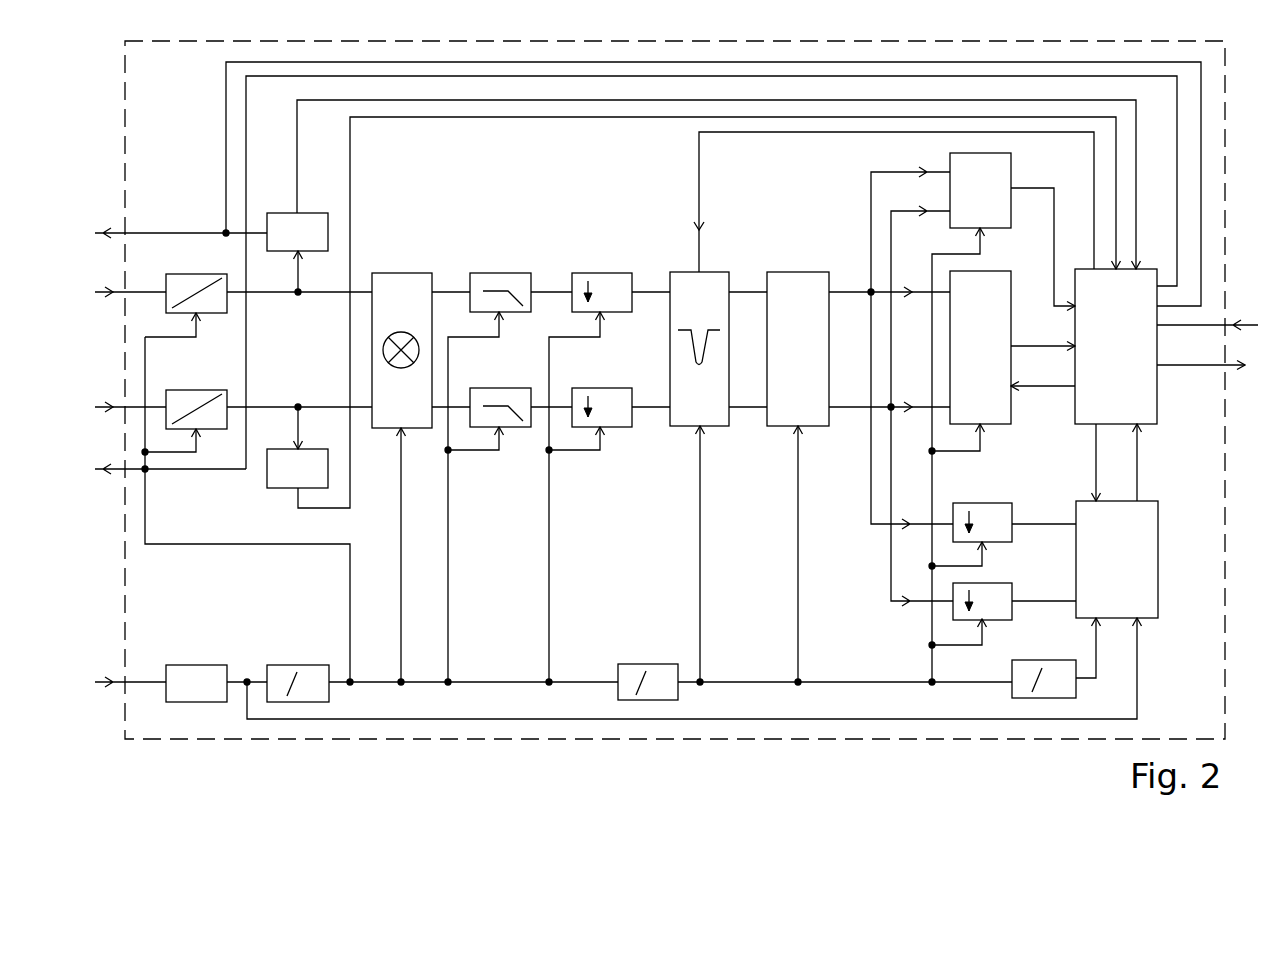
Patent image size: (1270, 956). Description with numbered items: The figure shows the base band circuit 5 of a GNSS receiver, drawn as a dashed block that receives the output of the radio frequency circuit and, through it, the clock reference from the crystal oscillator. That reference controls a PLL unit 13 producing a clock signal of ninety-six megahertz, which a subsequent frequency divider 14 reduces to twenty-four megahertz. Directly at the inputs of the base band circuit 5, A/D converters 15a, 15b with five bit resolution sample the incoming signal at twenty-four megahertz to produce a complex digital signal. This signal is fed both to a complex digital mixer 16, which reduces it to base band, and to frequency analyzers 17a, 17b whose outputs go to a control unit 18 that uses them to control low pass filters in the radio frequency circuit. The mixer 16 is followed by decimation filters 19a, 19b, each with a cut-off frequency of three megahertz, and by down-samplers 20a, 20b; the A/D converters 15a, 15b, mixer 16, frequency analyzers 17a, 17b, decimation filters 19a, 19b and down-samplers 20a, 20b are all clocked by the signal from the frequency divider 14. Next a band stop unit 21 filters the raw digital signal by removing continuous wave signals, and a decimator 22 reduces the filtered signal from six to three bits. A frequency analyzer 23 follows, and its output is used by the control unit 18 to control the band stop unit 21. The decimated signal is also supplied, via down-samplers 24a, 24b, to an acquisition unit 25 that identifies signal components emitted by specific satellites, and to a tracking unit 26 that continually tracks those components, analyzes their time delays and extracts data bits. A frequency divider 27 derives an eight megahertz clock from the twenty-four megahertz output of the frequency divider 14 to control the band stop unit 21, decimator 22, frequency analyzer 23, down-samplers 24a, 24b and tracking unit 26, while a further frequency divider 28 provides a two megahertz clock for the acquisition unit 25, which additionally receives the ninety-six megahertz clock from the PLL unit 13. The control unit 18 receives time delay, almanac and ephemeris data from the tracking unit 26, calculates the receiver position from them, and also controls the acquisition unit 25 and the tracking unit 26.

The base band circuit 5 is at (188, 748).
The PLL unit 13 is at (202, 668).
The frequency divider 14 is at (305, 667).
The A/D converter 15a is at (188, 277).
The A/D converter 15b is at (201, 393).
The complex digital mixer 16 is at (408, 282).
The frequency analyzer 17a is at (308, 217).
The frequency analyzer 17b is at (280, 480).
The control unit 18 is at (1150, 399).
The decimation filter 19a is at (499, 281).
The decimation filter 19b is at (496, 393).
The down-sampler 20a is at (600, 281).
The down-sampler 20b is at (613, 393).
The band stop unit 21 is at (717, 282).
The decimator 22 is at (802, 282).
The frequency analyzer 23 is at (1005, 166).
The down-sampler 24a is at (988, 507).
The down-sampler 24b is at (995, 584).
The acquisition unit 25 is at (1148, 523).
The tracking unit 26 is at (987, 278).
The frequency divider 27 is at (656, 665).
The further frequency divider 28 is at (1040, 660).